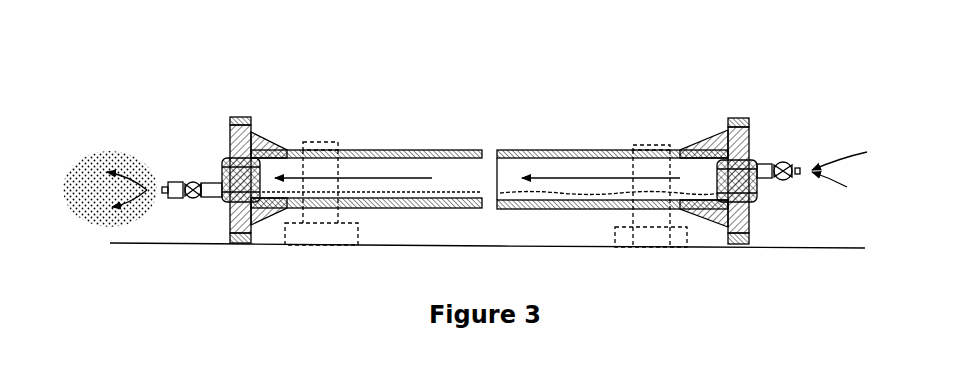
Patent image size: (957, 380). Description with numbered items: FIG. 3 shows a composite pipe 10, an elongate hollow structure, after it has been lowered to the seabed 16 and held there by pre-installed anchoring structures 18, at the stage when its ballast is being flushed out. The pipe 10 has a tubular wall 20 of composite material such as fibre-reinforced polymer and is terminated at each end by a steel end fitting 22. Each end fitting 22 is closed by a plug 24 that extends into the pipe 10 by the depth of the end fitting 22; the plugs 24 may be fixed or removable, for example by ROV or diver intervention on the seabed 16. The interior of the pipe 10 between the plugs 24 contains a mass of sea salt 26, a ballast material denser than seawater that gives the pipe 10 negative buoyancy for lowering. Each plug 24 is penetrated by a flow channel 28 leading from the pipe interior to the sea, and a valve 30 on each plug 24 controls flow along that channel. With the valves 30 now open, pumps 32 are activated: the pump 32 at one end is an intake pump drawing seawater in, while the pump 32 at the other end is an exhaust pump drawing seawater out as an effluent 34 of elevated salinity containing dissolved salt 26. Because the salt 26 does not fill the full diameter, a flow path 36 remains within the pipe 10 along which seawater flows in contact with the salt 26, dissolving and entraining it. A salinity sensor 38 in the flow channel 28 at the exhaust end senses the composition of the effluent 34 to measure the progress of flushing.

The composite pipe 10 is at (370, 93).
The seabed 16 is at (200, 247).
The anchoring structures 18 is at (650, 143).
The tubular wall 20 is at (542, 150).
The end fittings 22 is at (747, 120).
The plug 24 is at (222, 160).
The sea salt 26 is at (440, 198).
The flow channel 28 is at (253, 225).
The valve 30 is at (763, 173).
The pump 32 is at (787, 162).
The effluent 34 is at (105, 152).
The flow path 36 is at (587, 168).
The salinity sensor 38 is at (175, 182).